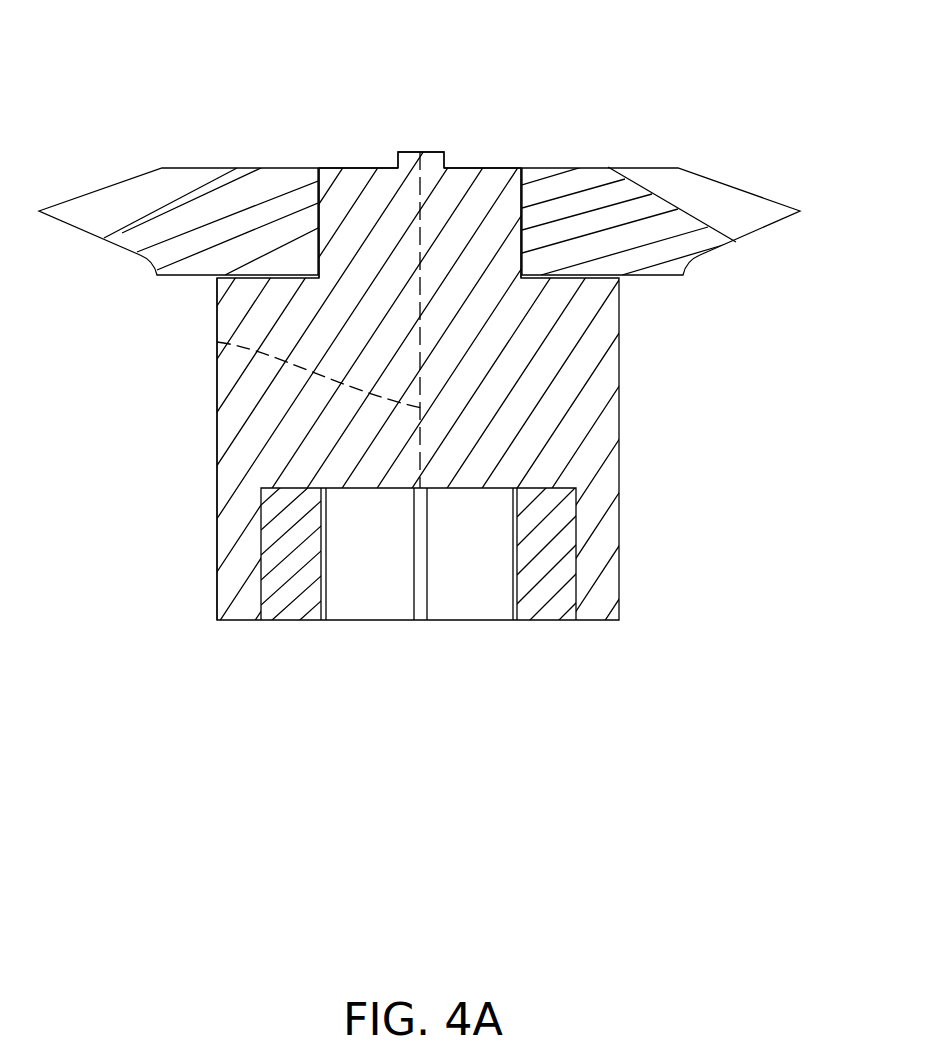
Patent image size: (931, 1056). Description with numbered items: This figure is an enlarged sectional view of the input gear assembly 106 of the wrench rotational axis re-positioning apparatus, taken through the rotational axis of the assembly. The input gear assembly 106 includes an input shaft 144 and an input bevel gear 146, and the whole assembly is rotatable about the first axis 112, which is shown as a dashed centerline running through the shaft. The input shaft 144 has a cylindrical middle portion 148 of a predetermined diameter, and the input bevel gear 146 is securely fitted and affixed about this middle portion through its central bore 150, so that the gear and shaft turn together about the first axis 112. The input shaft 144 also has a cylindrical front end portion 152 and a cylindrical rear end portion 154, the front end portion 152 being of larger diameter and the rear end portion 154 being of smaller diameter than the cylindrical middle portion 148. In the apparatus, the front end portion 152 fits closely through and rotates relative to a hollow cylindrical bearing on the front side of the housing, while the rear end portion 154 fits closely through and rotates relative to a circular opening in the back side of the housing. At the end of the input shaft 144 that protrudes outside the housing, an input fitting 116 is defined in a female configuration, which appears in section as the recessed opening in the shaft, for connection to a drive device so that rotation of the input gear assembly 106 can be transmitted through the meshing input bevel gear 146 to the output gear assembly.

The input gear assembly 106 is at (465, 352).
The first axis 112 is at (211, 340).
The input fitting 116 is at (302, 622).
The input shaft 144 is at (620, 372).
The input bevel gear 146 is at (259, 168).
The cylindrical middle portion 148 is at (330, 175).
The central bore 150 is at (507, 176).
The cylindrical front end portion 152 is at (217, 398).
The cylindrical rear end portion 154 is at (407, 160).